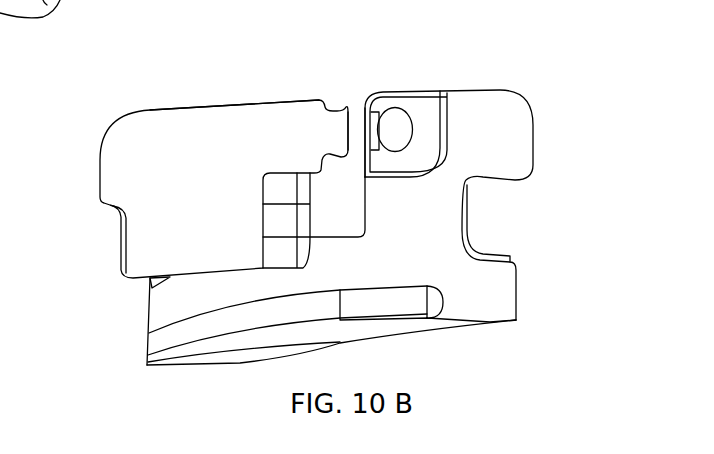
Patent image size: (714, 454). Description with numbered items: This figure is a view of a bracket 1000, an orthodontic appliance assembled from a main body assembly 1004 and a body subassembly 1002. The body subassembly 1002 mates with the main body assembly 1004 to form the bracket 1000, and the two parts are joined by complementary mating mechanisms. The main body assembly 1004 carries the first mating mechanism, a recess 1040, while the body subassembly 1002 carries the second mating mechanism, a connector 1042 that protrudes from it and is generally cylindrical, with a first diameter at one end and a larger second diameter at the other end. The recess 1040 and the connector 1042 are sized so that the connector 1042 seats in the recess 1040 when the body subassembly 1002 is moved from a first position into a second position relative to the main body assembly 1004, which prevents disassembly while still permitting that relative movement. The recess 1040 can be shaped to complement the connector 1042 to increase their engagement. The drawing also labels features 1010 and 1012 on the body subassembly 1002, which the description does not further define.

The bracket 1000 is at (132, 79).
The body subassembly 1002 is at (203, 107).
The main body assembly 1004 is at (533, 167).
The recessed surface 1010 is at (355, 216).
The top flange 1012 is at (293, 100).
The recess 1040 is at (403, 115).
The connector 1042 is at (348, 110).